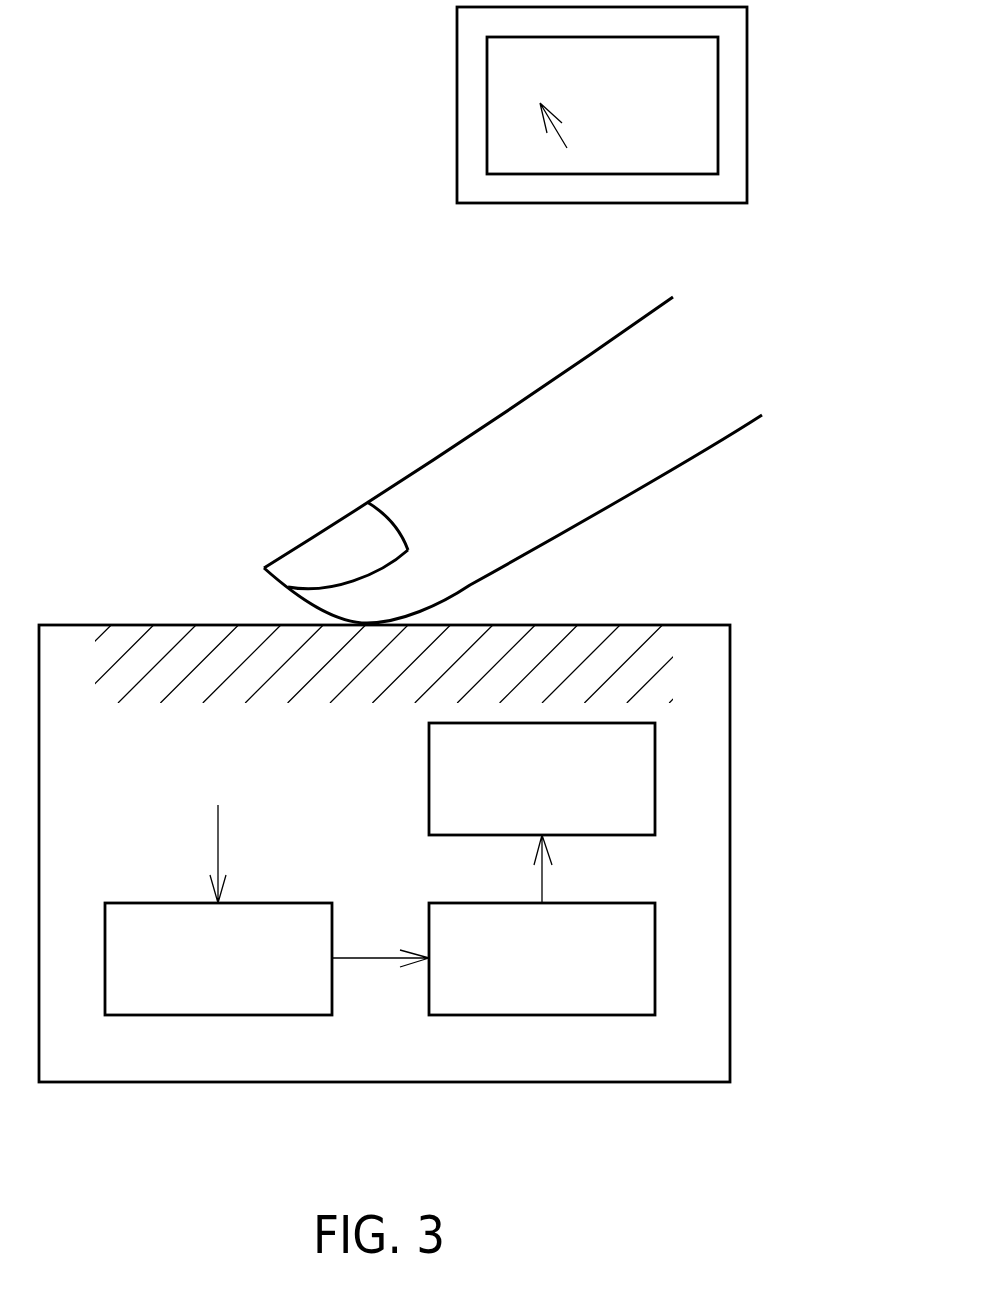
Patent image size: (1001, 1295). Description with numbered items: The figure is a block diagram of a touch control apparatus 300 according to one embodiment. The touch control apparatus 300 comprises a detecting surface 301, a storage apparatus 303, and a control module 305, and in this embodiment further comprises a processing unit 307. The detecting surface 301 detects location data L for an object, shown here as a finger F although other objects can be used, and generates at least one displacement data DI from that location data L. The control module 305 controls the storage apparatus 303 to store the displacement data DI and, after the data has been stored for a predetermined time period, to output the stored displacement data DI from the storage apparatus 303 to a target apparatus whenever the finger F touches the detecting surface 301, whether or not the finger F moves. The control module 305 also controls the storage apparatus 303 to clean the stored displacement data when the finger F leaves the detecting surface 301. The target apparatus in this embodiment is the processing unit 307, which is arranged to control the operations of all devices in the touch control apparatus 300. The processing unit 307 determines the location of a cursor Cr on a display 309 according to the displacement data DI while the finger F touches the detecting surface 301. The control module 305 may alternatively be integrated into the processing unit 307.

The touch control apparatus 300 is at (690, 562).
The detecting surface 301 is at (142, 625).
The storage apparatus 303 is at (472, 903).
The control module 305 is at (137, 903).
The processing unit 307 is at (429, 780).
The display 309 is at (457, 57).
The cursor Cr is at (553, 138).
The finger F is at (440, 452).
The location data L is at (226, 854).
The displacement data DI is at (462, 901).